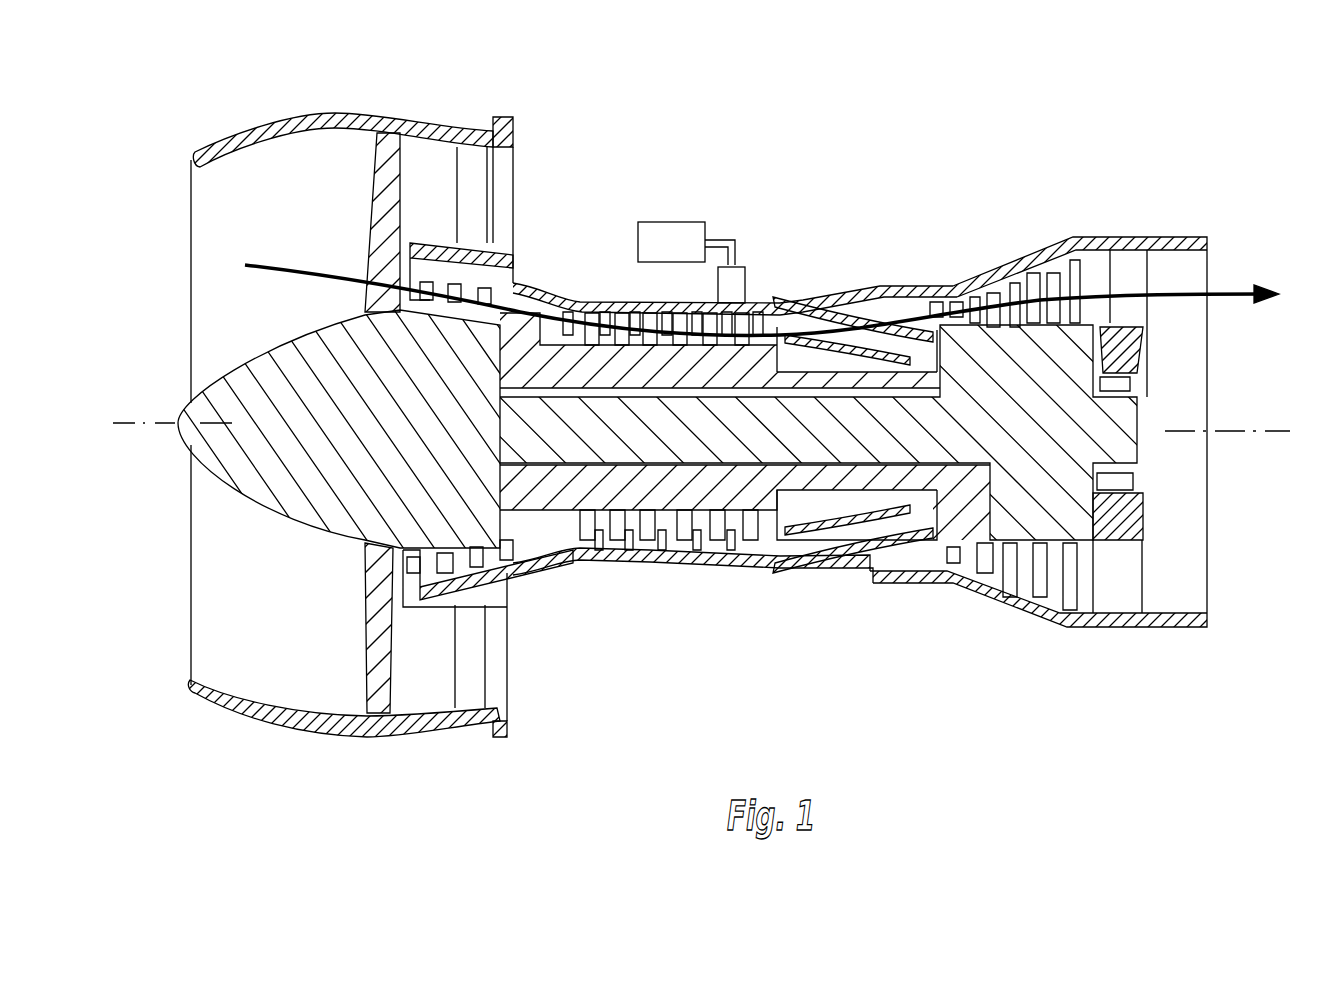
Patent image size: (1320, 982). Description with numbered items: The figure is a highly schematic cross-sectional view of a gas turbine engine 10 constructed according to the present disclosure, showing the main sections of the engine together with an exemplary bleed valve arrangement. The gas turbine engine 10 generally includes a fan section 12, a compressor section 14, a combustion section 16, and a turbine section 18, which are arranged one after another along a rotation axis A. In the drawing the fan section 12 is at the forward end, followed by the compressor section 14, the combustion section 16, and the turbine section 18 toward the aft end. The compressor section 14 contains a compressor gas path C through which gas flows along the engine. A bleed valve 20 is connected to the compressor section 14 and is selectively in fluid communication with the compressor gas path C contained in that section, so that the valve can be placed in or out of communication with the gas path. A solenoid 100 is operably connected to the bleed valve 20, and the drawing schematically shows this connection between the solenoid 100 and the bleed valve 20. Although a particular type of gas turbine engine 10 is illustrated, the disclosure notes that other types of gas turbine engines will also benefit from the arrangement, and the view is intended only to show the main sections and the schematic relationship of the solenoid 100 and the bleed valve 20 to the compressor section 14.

The gas turbine engine 10 is at (1133, 127).
The fan section 12 is at (350, 178).
The compressor section 14 is at (760, 207).
The combustion section 16 is at (930, 215).
The turbine section 18 is at (1160, 215).
The bleed valve 20 is at (748, 276).
The solenoid 100 is at (638, 240).
The rotation axis A is at (701, 407).
The compressor gas path C is at (1222, 302).